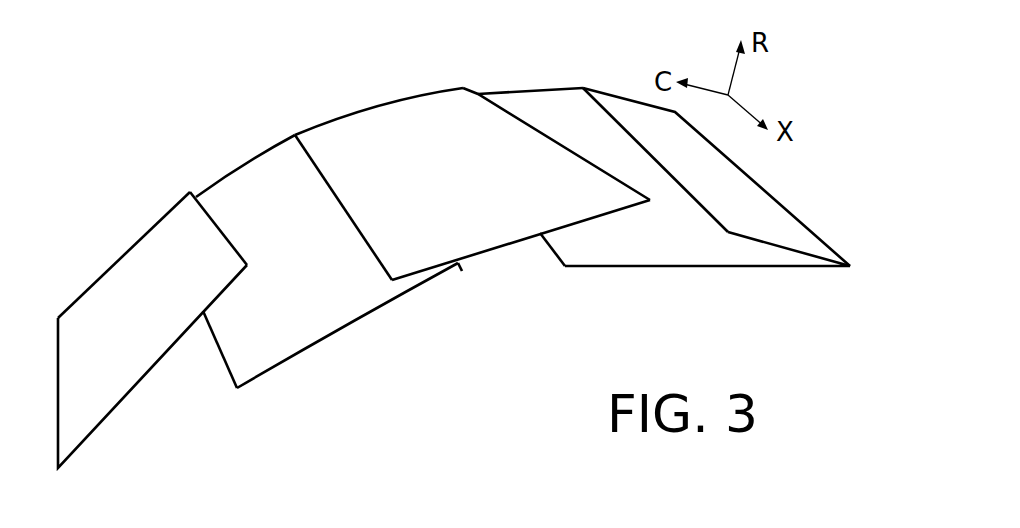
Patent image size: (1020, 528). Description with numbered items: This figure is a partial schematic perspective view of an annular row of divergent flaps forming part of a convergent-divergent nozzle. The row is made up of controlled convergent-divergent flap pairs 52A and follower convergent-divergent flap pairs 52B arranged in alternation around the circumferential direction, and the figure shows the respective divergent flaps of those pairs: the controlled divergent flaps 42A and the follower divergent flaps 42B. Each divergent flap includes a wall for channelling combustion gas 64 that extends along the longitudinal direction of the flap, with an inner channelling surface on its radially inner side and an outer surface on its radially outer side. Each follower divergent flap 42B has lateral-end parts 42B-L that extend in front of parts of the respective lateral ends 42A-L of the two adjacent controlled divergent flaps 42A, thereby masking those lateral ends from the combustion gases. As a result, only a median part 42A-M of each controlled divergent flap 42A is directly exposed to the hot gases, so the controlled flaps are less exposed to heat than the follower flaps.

The controlled divergent flap 42A is at (354, 217).
The lateral end of controlled divergent flap 42A-L is at (200, 243).
The median part of controlled divergent flap 42A-M is at (463, 200).
The controlled convergent-divergent flap pair 52A is at (354, 236).
The follower divergent flap 42B is at (523, 262).
The lateral-end part of follower divergent flap 42B-L is at (235, 358).
The follower convergent-divergent flap pair 52B is at (523, 262).
The wall for channelling combustion gas 64 is at (93, 435).